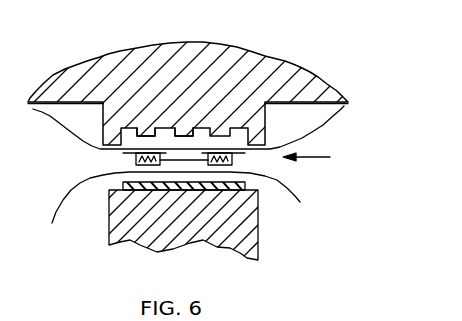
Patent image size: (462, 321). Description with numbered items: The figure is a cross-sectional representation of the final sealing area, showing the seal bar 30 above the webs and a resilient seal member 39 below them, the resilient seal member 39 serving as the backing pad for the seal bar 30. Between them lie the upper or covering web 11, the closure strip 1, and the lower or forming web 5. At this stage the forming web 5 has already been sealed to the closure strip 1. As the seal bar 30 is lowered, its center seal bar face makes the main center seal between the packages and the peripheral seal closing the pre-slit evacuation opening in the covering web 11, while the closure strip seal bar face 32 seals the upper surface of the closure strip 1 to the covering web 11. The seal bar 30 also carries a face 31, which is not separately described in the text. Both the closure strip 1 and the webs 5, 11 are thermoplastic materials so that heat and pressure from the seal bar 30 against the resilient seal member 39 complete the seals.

The seal bar 30 is at (258, 57).
The tooth projection 31 is at (190, 128).
The closure strip seal bar face 32 is at (146, 128).
The covering web 11 is at (322, 127).
The closure strip 1 is at (313, 160).
The forming web 5 is at (297, 193).
The resilient seal member 39 is at (150, 190).